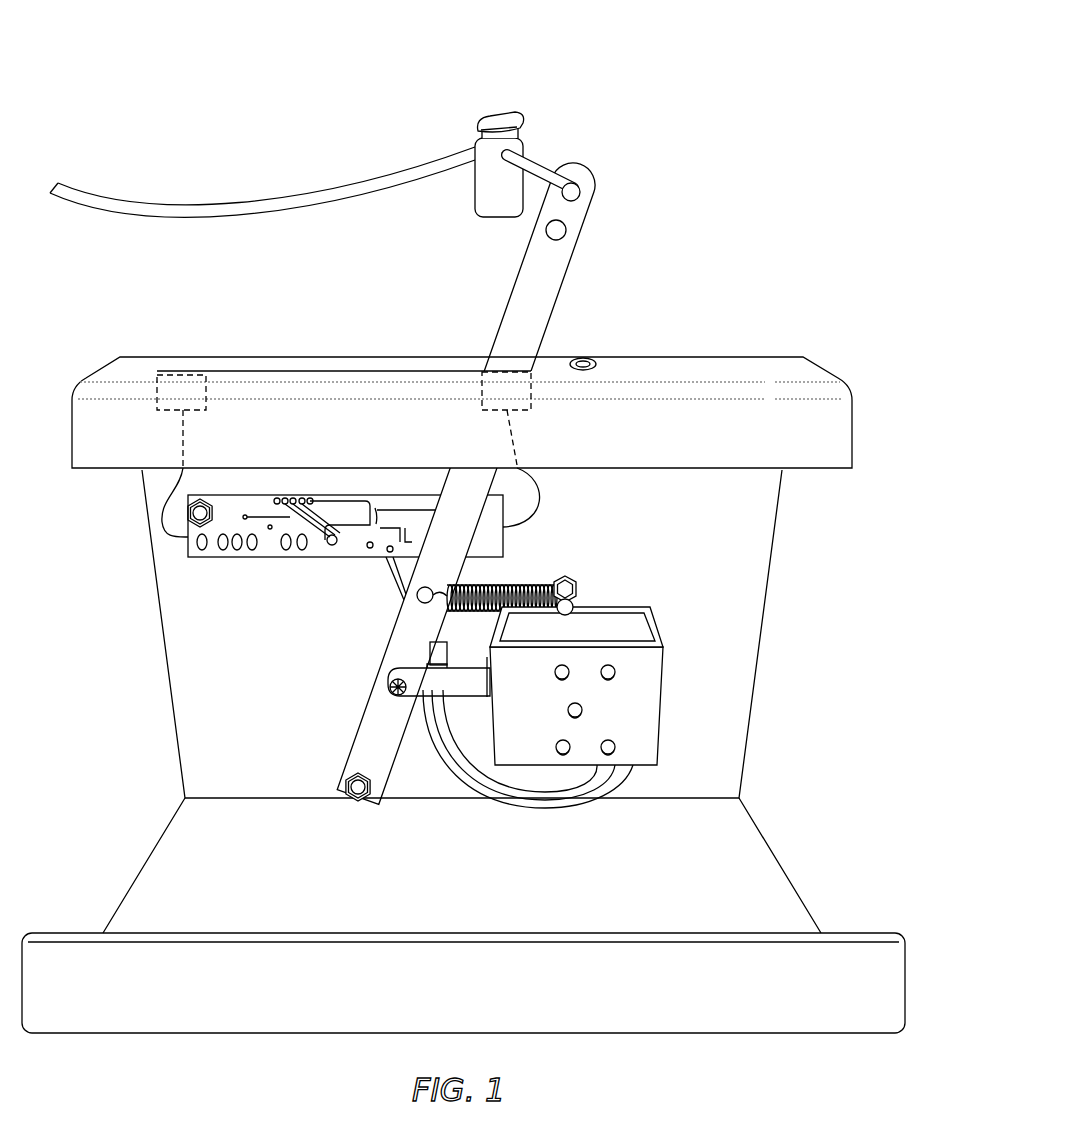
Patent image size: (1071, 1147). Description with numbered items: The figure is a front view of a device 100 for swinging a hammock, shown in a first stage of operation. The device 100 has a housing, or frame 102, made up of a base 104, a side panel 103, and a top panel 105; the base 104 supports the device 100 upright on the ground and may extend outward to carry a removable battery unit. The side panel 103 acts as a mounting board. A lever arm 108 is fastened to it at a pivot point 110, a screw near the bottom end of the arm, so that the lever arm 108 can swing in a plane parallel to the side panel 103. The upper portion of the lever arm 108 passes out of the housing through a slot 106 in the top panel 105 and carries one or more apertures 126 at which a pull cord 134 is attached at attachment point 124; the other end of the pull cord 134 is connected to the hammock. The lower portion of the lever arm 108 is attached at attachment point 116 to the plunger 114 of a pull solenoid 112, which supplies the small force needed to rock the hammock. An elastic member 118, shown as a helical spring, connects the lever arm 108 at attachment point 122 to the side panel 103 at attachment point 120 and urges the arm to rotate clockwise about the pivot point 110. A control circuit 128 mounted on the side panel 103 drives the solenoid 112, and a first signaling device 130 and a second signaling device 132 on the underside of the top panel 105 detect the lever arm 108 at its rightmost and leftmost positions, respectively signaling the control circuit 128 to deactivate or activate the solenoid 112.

The device 100 is at (673, 75).
The frame 102 is at (773, 548).
The side panel 103 is at (706, 546).
The base 104 is at (467, 889).
The top panel 105 is at (805, 370).
The slot 106 is at (323, 370).
The lever arm 108 is at (537, 292).
The pivot point 110 is at (345, 780).
The solenoid 112 is at (650, 707).
The plunger 114 is at (418, 677).
The attachment point 116 is at (387, 688).
The elastic member 118 is at (520, 585).
The attachment point 120 is at (580, 590).
The attachment point 122 is at (418, 600).
The attachment point 124 is at (582, 200).
The apertures 126 is at (568, 235).
The control circuit 128 is at (233, 552).
The first signaling device 130 is at (497, 392).
The second signaling device 132 is at (165, 390).
The pull cord 134 is at (310, 188).